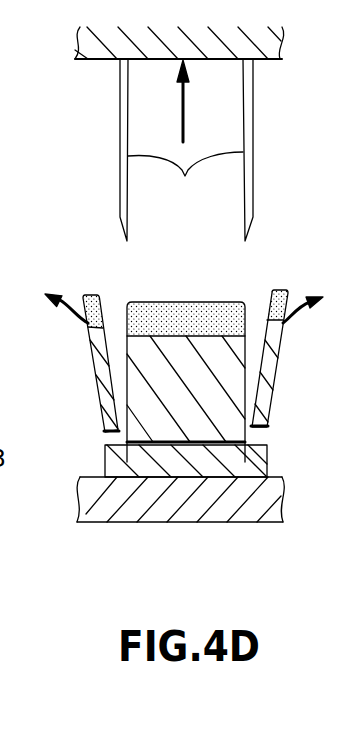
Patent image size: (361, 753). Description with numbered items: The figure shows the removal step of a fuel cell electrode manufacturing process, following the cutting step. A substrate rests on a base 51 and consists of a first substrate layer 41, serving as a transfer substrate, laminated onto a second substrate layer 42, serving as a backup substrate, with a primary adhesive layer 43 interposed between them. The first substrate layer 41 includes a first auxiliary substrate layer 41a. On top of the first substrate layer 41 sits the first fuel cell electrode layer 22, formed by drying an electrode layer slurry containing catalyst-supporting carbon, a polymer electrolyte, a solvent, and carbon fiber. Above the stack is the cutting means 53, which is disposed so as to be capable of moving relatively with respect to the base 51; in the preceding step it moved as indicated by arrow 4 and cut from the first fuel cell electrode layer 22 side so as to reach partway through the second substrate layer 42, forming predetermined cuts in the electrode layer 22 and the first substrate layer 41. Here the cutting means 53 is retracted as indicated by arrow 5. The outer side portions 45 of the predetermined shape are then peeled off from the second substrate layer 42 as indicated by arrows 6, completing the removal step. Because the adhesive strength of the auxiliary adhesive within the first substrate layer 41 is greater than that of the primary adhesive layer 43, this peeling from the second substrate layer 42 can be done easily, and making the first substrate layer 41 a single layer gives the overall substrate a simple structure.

The arrow 4 is at (163, 340).
The arrow 5 is at (187, 100).
The arrows 6 is at (72, 312).
The first fuel cell electrode layer 22 is at (92, 300).
The first substrate layer 41 is at (206, 330).
The first auxiliary substrate layer 41a is at (170, 347).
The second substrate layer 42 is at (104, 458).
The primary adhesive layer 43 is at (104, 437).
The outer side portions 45 is at (90, 383).
The base 51 is at (127, 522).
The cutting means 53 is at (179, 134).